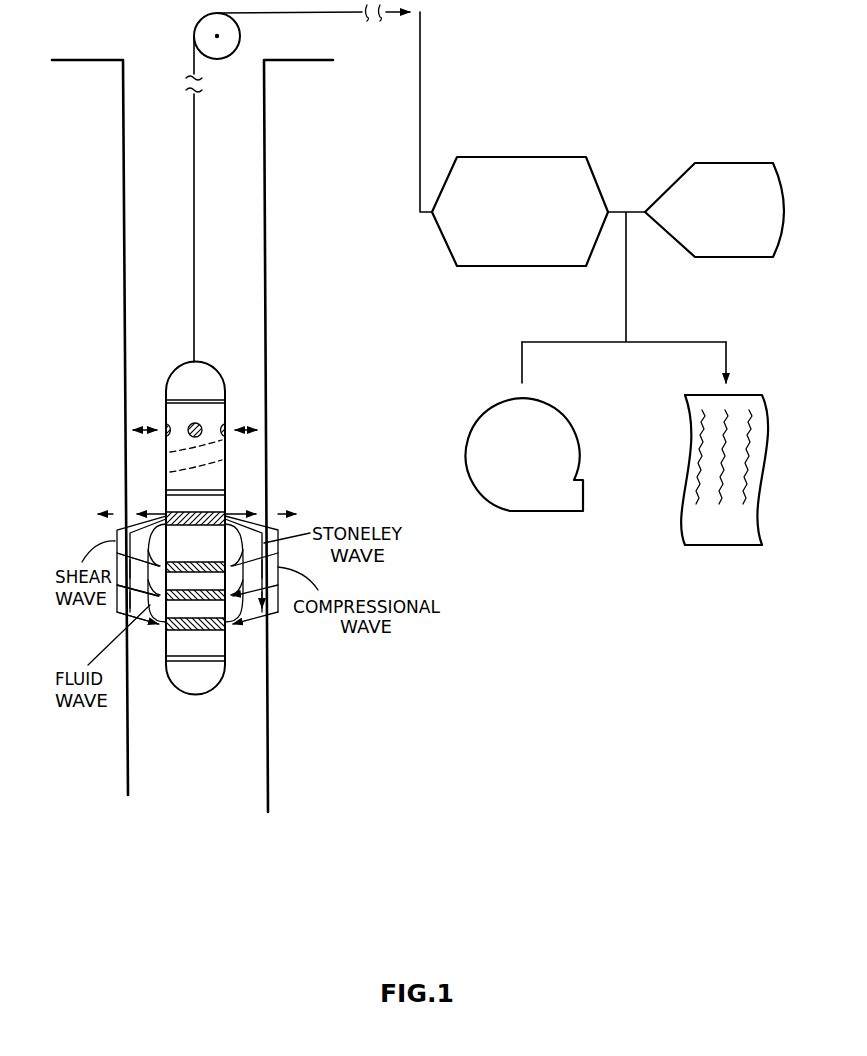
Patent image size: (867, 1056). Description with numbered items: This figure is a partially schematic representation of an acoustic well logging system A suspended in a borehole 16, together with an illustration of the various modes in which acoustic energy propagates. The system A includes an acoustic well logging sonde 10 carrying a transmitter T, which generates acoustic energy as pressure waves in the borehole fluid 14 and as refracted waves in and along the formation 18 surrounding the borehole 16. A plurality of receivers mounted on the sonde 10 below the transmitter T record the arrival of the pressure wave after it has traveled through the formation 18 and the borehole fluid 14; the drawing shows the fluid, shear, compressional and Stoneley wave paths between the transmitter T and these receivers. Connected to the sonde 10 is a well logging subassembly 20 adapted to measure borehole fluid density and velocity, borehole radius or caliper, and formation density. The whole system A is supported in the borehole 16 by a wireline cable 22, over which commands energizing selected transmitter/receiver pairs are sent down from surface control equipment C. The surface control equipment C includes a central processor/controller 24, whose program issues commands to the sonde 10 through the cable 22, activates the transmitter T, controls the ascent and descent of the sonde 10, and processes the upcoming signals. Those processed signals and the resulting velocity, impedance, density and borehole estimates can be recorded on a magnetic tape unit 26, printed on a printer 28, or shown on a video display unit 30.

The acoustic well logging sonde 10 is at (213, 528).
The borehole fluid 14 is at (197, 757).
The borehole 16 is at (123, 95).
The formation 18 is at (308, 192).
The well logging subassembly 20 is at (225, 415).
The wireline cable 22 is at (194, 262).
The processor/controller 24 is at (495, 266).
The magnetic tape unit 26 is at (475, 487).
The printer 28 is at (680, 507).
The video display unit 30 is at (703, 163).
The acoustic well logging system A is at (145, 478).
The transmitter T is at (228, 509).
The surface control equipment C is at (608, 301).